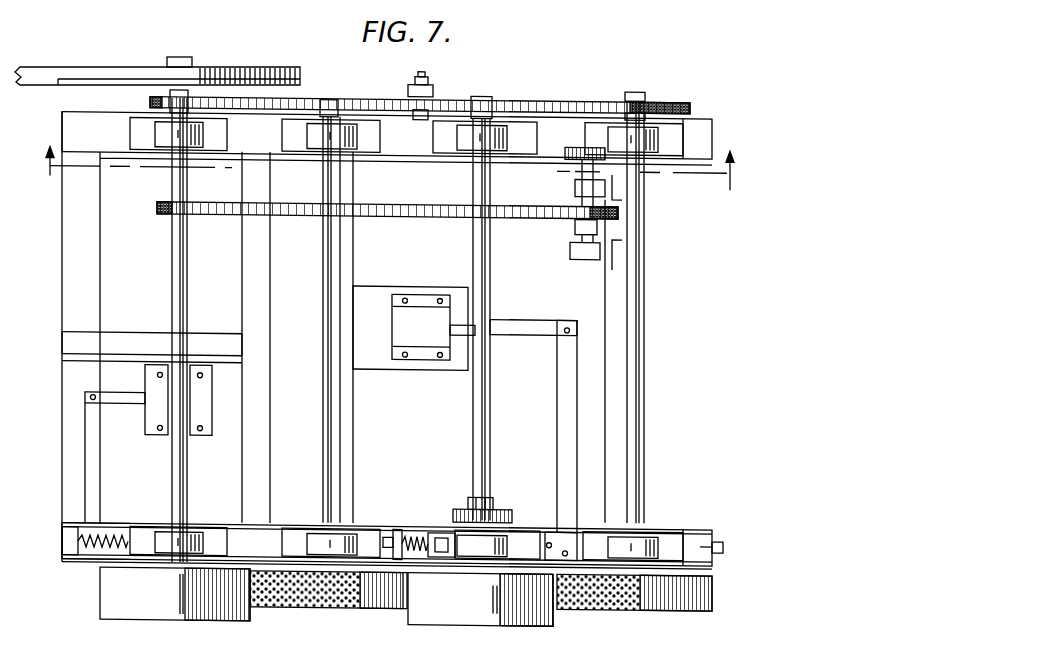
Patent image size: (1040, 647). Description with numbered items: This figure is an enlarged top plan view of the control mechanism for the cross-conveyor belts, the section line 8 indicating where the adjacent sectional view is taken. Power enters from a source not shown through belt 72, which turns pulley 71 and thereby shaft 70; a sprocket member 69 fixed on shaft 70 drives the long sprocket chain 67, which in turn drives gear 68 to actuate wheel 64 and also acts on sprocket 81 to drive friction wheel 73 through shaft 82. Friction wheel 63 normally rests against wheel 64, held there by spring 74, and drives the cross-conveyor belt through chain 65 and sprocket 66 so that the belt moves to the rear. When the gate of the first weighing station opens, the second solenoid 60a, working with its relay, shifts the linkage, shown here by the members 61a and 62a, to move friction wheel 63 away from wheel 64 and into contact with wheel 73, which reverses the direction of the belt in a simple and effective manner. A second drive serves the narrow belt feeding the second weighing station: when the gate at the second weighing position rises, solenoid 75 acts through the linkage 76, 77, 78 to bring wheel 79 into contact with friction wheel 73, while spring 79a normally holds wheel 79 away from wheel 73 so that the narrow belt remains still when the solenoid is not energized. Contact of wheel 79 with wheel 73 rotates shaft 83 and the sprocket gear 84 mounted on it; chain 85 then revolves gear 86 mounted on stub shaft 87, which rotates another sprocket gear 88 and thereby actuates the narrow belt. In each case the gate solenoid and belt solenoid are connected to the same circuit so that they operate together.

The section line 8- 8 is at (385, 168).
The second solenoid 60a is at (415, 302).
The arm 61a is at (525, 316).
The bracket bar 62a is at (560, 381).
The friction wheel 63 is at (470, 607).
The wheel 64 is at (608, 588).
The chain 65 is at (455, 513).
The sprocket 66 is at (510, 509).
The sprocket chain 67 is at (240, 97).
The gear 68 is at (692, 97).
The sprocket member 69 is at (150, 99).
The shaft 70 is at (185, 53).
The pulley 71 is at (123, 57).
The belt 72 is at (40, 63).
The friction wheel 73 is at (283, 595).
The spring 74 is at (410, 525).
The solenoid 75 is at (200, 403).
The linkage 76 is at (118, 397).
The linkage 77 is at (92, 472).
The linkage 78 is at (100, 556).
The wheel 79 is at (140, 603).
The spring 79a is at (103, 534).
The sprocket 81 is at (308, 96).
The shaft 82 is at (325, 404).
The shaft 83 is at (180, 288).
The sprocket gear 84 is at (157, 205).
The chain 85 is at (368, 198).
The gear 86 is at (575, 198).
The stub shaft 87 is at (570, 232).
The sprocket gear 88 is at (575, 141).